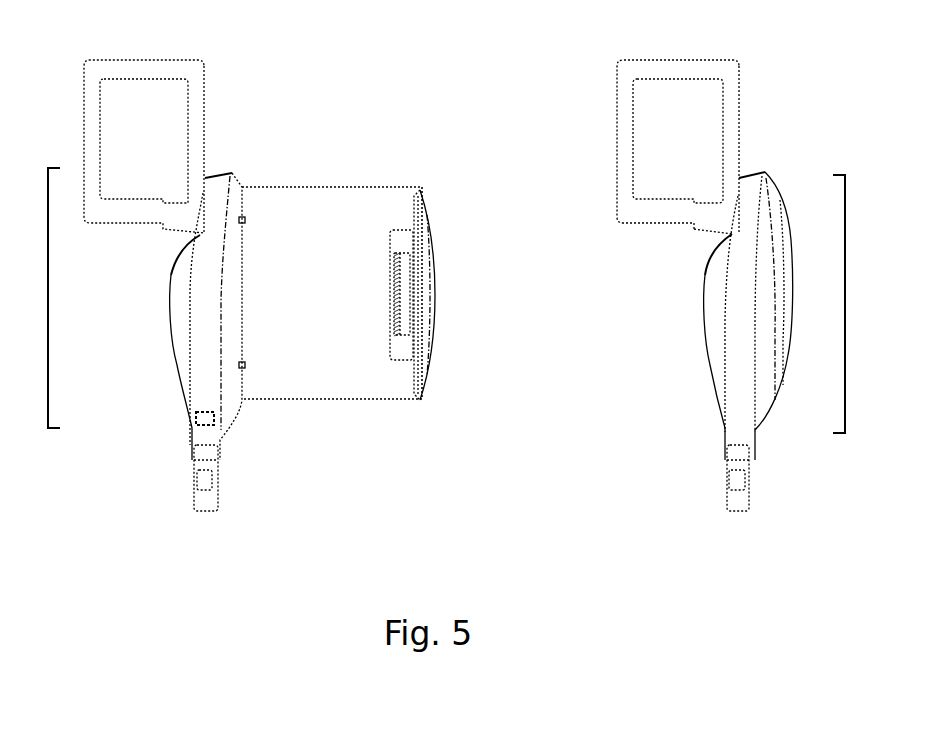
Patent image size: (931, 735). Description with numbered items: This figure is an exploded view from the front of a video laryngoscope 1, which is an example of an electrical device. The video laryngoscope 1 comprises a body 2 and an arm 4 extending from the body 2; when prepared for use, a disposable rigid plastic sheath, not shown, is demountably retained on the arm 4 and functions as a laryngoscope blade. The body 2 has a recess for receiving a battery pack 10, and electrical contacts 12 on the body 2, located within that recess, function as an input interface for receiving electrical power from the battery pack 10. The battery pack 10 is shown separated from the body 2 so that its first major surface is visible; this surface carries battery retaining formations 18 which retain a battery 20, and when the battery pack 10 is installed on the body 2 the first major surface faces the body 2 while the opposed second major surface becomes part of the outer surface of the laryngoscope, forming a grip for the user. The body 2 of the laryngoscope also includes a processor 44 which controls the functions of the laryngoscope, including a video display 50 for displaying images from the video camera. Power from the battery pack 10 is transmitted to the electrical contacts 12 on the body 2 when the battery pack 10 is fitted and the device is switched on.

The video laryngoscope 1 is at (577, 439).
The body 2 is at (444, 300).
The arm 4 is at (200, 462).
The battery pack 10 is at (782, 311).
The electrical contacts 12 is at (247, 360).
The battery retaining formations 18 is at (405, 283).
The battery 20 is at (393, 343).
The processor 44 is at (216, 419).
The video display 50 is at (204, 63).